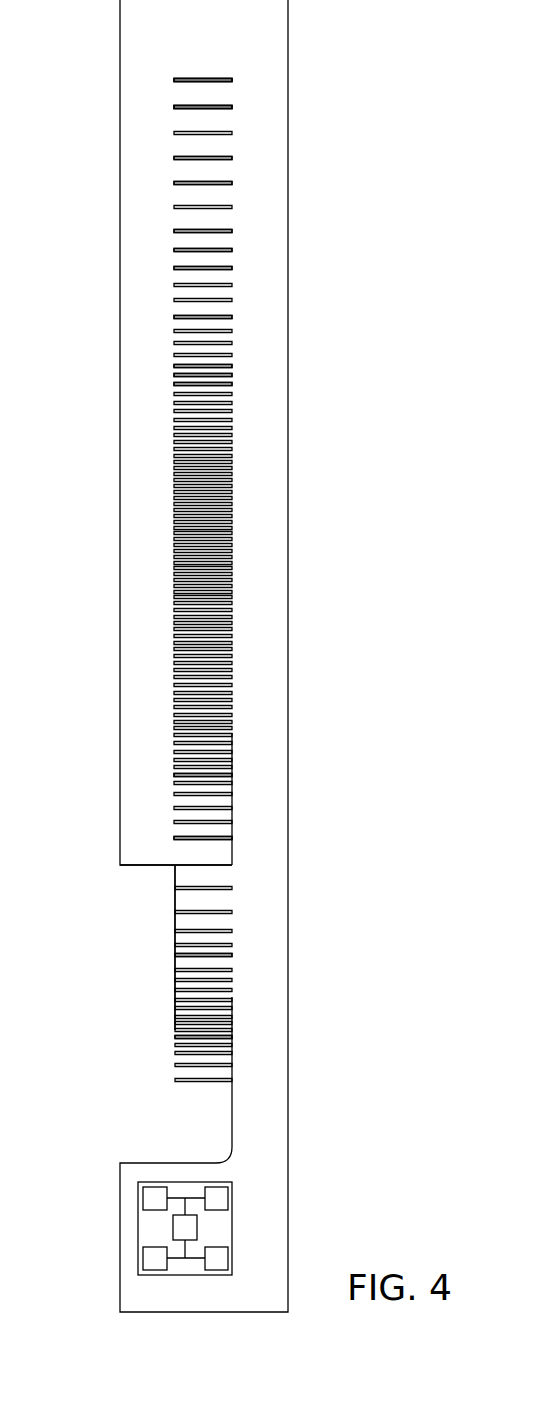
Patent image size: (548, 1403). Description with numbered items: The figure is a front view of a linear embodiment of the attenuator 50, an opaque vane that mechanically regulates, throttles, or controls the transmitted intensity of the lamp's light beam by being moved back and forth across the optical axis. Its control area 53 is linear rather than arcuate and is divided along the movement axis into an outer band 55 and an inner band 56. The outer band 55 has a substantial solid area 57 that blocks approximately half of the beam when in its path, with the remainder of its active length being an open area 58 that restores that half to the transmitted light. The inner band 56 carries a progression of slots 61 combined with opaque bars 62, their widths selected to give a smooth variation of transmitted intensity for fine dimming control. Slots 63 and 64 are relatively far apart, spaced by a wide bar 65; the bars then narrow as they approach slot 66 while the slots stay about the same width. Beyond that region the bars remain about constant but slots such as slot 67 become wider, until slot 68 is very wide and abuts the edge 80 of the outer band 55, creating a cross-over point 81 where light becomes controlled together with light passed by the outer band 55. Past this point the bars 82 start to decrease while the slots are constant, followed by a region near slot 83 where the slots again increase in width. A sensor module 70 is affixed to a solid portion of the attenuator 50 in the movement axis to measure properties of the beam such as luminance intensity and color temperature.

The attenuator 50 is at (290, 287).
The control area 53 is at (270, 246).
The outer band 55 is at (258, 378).
The inner band 56 is at (203, 70).
The solid area 57 is at (273, 724).
The open area 58 is at (146, 966).
The slots 61 is at (233, 183).
The opaque bars 62 is at (228, 167).
The slot 63 is at (232, 80).
The slot 64 is at (233, 108).
The wide bar 65 is at (194, 100).
The slot 66 is at (232, 317).
The slot 67 is at (175, 775).
The slot 68 is at (187, 852).
The sensor module 70 is at (178, 1276).
The edge 80 is at (157, 866).
The cross-over point 81 is at (174, 866).
The bars 82 is at (182, 952).
The slot 83 is at (175, 1037).